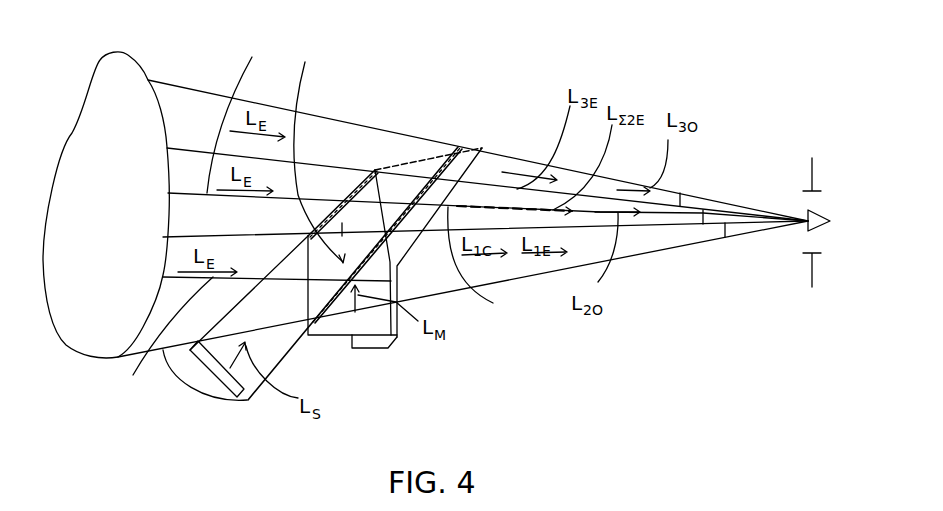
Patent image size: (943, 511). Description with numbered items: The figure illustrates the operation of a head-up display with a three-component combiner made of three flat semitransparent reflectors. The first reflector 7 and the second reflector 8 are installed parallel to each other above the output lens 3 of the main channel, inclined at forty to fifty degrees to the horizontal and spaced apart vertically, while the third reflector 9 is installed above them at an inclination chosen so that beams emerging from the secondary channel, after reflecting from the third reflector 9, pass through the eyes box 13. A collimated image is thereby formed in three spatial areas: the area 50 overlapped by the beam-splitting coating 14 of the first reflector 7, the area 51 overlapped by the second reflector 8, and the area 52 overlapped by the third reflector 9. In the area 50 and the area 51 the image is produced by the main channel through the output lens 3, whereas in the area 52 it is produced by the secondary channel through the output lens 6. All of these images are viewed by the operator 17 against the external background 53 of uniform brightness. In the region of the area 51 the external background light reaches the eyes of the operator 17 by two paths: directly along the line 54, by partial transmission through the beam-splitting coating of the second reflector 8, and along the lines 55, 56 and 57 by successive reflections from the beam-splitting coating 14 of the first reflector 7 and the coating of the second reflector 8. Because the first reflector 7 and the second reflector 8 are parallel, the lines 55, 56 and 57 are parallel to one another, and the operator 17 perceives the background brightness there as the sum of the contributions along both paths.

The external background 53 is at (160, 100).
The line 54 is at (237, 111).
The line 55 is at (161, 343).
The line 56 is at (319, 150).
The second reflector 8 is at (362, 188).
The third reflector 9 is at (436, 154).
The first reflector 7 is at (462, 178).
The output lens 3 is at (357, 337).
The beam-splitting coating 14 is at (370, 262).
The line 57 is at (486, 266).
The output lens 6 is at (229, 367).
The area 52 is at (681, 197).
The area 51 is at (703, 224).
The area 50 is at (725, 237).
The eyes box 13 is at (811, 186).
The operator 17 is at (806, 226).